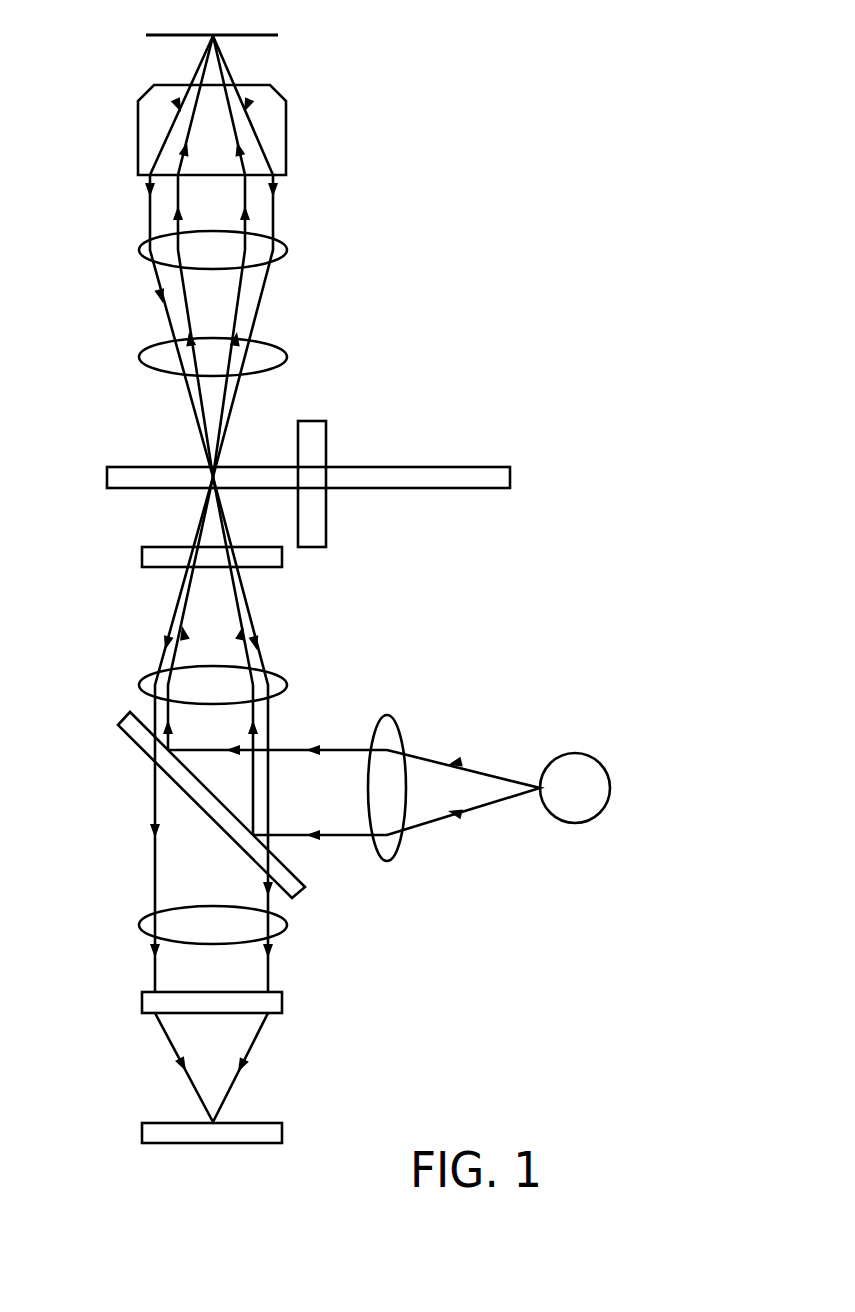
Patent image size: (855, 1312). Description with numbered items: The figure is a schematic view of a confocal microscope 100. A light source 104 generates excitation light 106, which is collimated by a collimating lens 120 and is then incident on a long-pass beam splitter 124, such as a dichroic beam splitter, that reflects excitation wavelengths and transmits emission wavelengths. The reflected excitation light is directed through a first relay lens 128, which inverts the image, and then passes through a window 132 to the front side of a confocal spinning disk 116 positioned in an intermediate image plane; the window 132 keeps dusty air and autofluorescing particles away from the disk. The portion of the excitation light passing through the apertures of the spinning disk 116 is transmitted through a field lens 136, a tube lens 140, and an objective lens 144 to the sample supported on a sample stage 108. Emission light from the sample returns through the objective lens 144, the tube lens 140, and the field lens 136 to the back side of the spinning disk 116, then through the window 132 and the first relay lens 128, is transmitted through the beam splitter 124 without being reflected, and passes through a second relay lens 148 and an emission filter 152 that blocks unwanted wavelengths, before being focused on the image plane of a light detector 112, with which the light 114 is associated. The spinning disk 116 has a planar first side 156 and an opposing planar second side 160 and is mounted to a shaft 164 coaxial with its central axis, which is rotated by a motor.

The confocal microscope 100 is at (645, 210).
The light source 104 is at (563, 823).
The excitation light 106 is at (490, 777).
The sample stage 108 is at (158, 37).
The light detector 112 is at (142, 1133).
The excitation light 114 is at (252, 1053).
The confocal spinning disk 116 is at (104, 478).
The collimating lens 120 is at (387, 863).
The long-pass beam splitter 124 is at (118, 722).
The first relay lens 128 is at (136, 687).
The window 132 is at (141, 556).
The field lens 136 is at (138, 357).
The tube lens 140 is at (138, 251).
The objective lens 144 is at (138, 147).
The second relay lens 148 is at (138, 927).
The emission filter 152 is at (142, 1003).
The first side 156 is at (478, 493).
The second side 160 is at (455, 462).
The shaft 164 is at (327, 500).